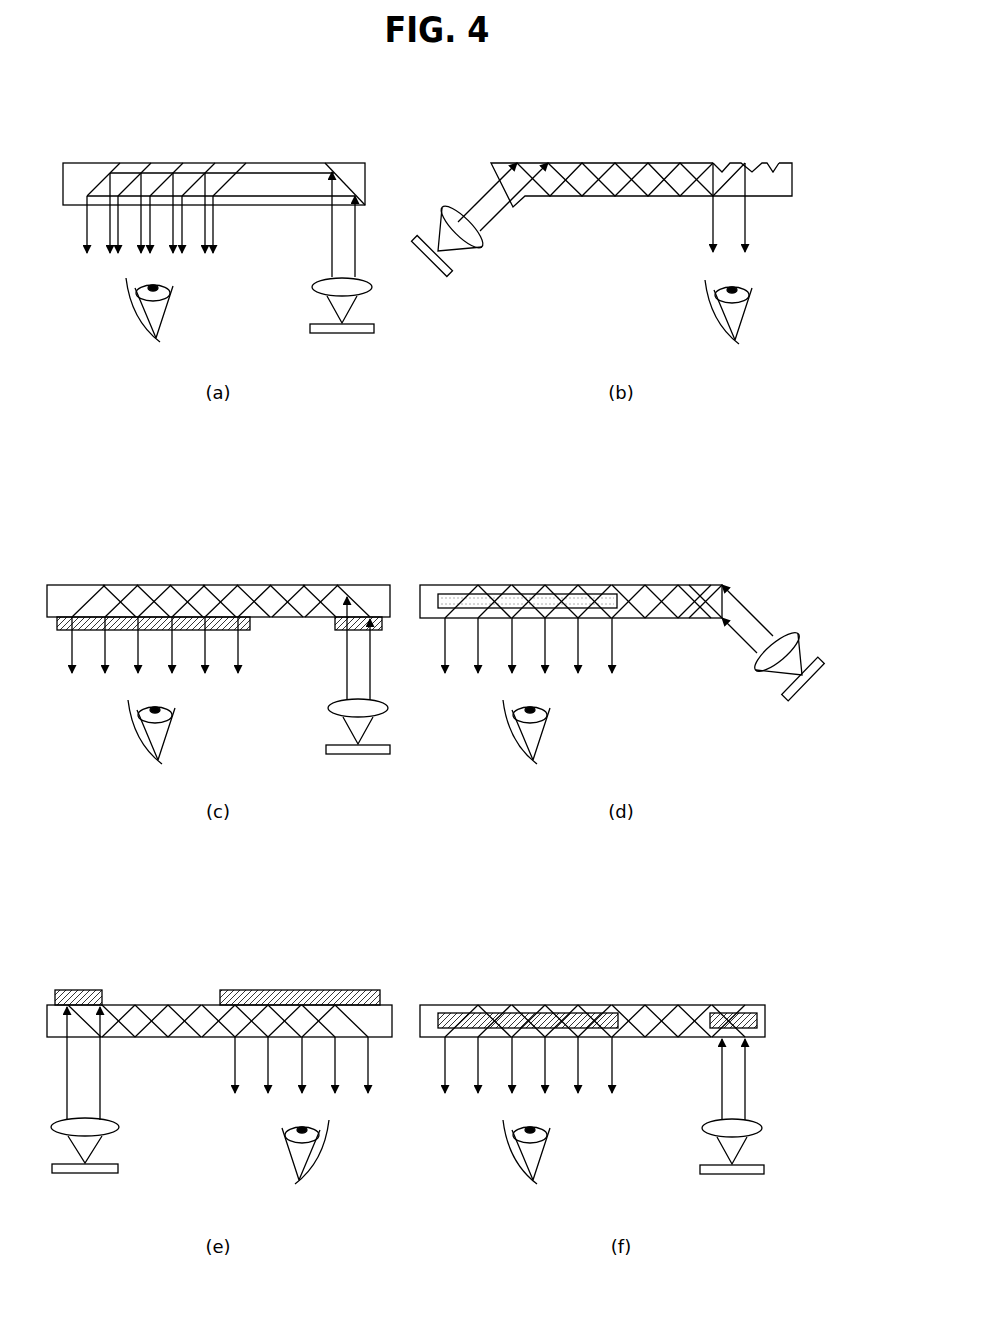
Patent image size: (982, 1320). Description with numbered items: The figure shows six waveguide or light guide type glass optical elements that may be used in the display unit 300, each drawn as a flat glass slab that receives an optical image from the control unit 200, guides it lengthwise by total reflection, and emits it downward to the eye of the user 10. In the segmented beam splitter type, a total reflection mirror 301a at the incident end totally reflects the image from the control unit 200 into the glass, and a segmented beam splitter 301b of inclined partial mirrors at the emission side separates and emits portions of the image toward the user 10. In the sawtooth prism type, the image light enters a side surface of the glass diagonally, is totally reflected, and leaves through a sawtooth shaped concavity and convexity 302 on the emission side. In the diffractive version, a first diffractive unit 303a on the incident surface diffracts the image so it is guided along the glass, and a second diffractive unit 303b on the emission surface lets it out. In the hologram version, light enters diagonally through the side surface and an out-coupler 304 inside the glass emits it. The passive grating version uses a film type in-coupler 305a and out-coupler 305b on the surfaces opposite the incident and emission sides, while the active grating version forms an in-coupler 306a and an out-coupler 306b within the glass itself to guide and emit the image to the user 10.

The user 10 is at (131, 307).
The control unit 200 is at (437, 688).
The display unit 300 is at (88, 163).
The total reflection mirror 301a is at (342, 178).
The segmented beam splitter 301b is at (178, 163).
The sawtooth shaped concavity and convexity 302 is at (755, 163).
The first diffractive unit 303a is at (338, 631).
The second diffractive unit 303b is at (245, 631).
The out-coupler 304 is at (561, 594).
The in-coupler 305a is at (78, 990).
The out-coupler 305b is at (302, 990).
The in-coupler 306a is at (741, 1013).
The out-coupler 306b is at (561, 1013).